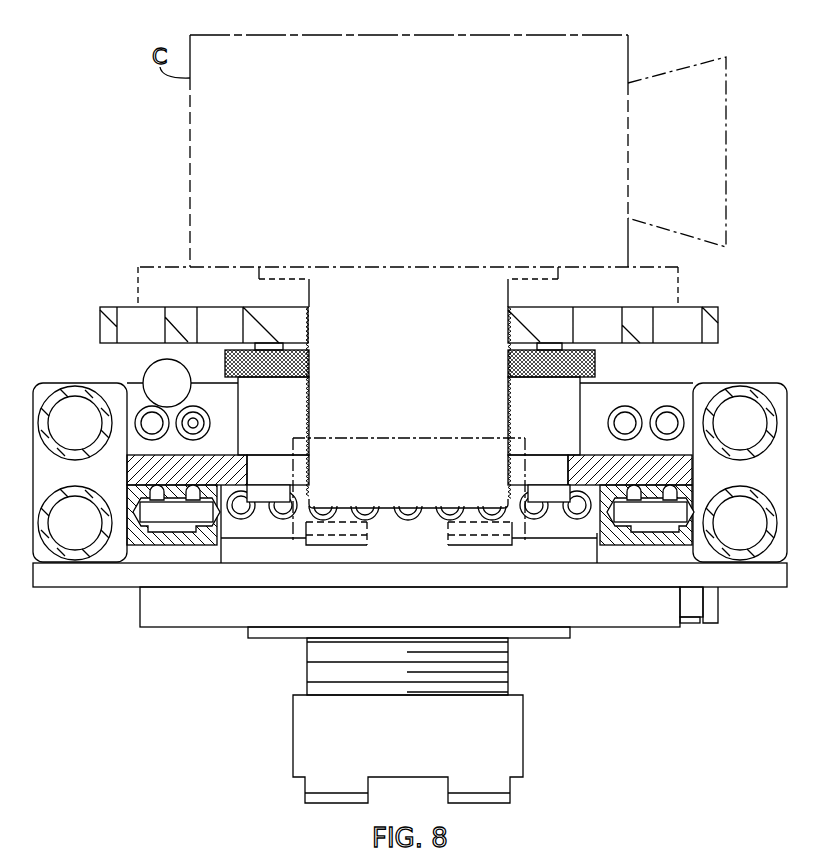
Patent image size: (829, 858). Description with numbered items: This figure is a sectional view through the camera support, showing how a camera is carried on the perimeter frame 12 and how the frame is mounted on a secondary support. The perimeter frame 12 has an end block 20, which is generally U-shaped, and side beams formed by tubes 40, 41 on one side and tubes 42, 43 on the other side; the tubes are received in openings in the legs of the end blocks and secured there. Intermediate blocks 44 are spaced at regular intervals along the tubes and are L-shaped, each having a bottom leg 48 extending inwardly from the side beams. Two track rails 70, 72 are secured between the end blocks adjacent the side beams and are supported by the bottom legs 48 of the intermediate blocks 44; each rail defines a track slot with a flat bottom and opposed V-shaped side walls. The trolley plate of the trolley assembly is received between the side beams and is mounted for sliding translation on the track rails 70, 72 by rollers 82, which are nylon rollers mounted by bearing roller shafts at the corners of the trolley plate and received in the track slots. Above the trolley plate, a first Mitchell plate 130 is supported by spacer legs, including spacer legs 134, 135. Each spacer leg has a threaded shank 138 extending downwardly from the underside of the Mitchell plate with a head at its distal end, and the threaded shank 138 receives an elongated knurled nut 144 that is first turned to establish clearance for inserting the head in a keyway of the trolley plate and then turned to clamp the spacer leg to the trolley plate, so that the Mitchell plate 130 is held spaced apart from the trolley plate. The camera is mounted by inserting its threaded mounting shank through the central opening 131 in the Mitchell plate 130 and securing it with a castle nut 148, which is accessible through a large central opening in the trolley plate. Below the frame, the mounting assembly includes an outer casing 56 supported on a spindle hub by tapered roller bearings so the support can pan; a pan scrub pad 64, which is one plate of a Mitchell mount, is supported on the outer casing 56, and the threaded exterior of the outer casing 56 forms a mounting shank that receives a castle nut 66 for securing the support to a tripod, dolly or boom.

The perimeter frame 12 is at (61, 381).
The end block 20 is at (666, 380).
The tube 40 is at (744, 378).
The tube 41 is at (745, 565).
The tube 42 is at (88, 389).
The tube 43 is at (88, 562).
The intermediate block 44 is at (764, 384).
The bottom leg 48 is at (212, 557).
The outer casing 56 is at (307, 655).
The pan scrub pad 64 is at (592, 615).
The castle nut 66 is at (524, 733).
The track rail 70 is at (654, 544).
The track rail 72 is at (158, 547).
The roller 82 is at (180, 513).
The first Mitchell plate 130 is at (100, 325).
The central opening 131 is at (309, 327).
The spacer leg 134 is at (582, 399).
The spacer leg 135 is at (284, 405).
The threaded shank 138 is at (562, 348).
The elongated knurled nut 144 is at (225, 366).
The castle nut 148 is at (414, 452).